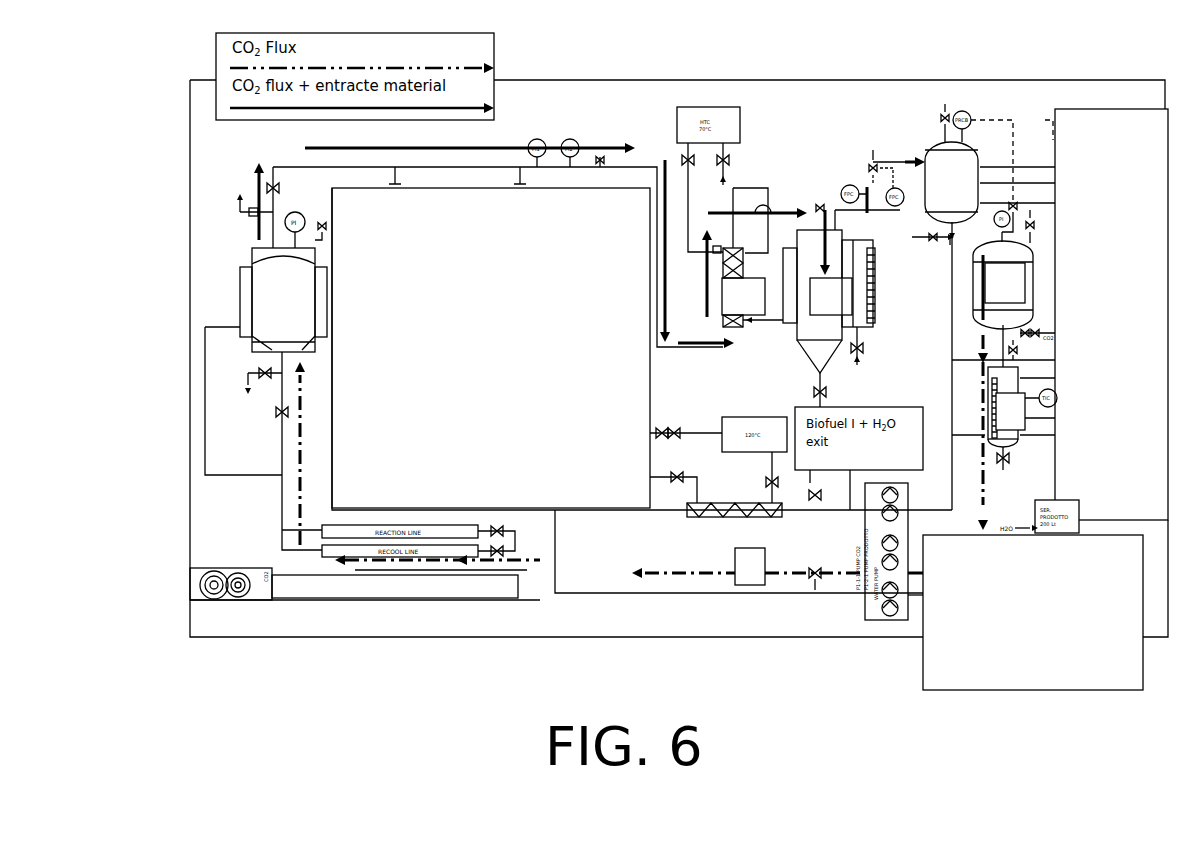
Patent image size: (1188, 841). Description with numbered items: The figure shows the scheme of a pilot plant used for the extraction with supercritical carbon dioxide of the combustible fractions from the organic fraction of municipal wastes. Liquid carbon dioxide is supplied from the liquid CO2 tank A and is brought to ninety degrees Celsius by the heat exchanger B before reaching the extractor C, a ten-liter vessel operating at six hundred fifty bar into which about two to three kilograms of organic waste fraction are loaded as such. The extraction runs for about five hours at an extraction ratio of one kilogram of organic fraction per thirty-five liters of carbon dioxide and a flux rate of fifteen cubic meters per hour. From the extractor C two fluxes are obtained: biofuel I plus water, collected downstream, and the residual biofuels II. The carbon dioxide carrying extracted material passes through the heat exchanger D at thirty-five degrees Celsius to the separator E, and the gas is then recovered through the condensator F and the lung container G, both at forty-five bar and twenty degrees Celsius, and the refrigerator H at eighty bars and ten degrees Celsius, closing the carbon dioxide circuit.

The liquid CO2 tank A is at (1033, 612).
The heat exchanger (90° C.) B is at (750, 566).
The extractor C is at (283, 300).
The heat exchanger (35° C.) D is at (743, 287).
The separator E is at (836, 301).
The condensator F is at (951, 182).
The lung container G is at (1003, 285).
The refrigerator H is at (1006, 407).